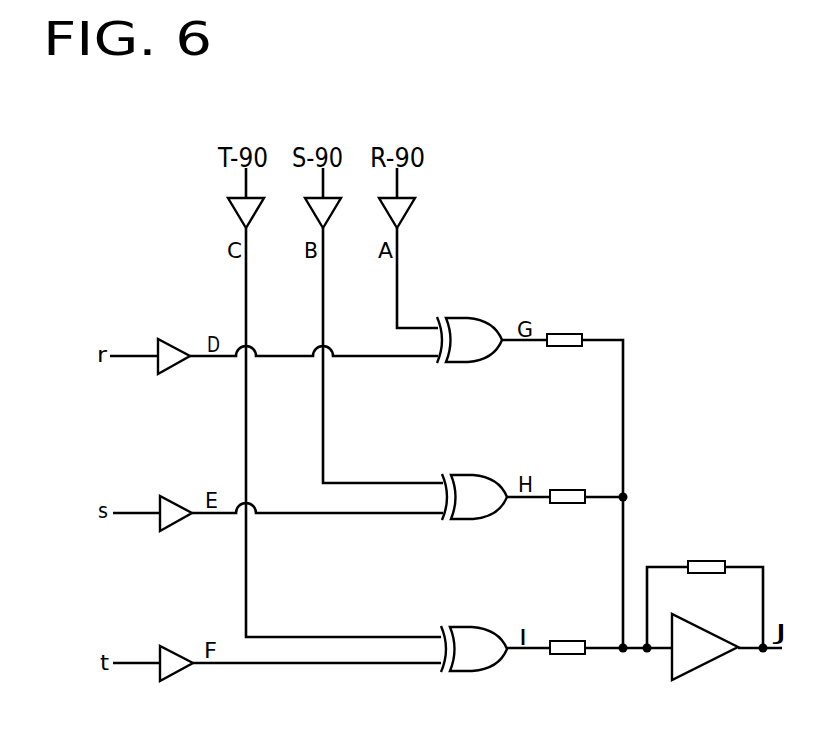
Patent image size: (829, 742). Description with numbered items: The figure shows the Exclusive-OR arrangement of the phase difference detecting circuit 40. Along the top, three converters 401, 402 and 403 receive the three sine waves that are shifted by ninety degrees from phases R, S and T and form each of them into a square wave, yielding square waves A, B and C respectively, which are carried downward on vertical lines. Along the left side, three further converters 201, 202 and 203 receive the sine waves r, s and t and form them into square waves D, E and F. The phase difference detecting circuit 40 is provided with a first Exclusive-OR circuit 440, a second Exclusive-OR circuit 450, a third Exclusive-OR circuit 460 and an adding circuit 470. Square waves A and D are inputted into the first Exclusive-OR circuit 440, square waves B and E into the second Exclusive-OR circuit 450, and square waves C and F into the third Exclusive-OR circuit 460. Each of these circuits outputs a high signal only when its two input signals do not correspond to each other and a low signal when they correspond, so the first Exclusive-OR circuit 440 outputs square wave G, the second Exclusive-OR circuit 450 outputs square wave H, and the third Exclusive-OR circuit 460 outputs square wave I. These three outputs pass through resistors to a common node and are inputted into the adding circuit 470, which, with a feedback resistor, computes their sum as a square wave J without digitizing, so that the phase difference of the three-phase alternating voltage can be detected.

The phase difference detecting circuit 40 is at (491, 488).
The converter 201 is at (178, 367).
The converter 202 is at (177, 523).
The converter 203 is at (177, 673).
The converter 401 is at (400, 212).
The converter 402 is at (356, 212).
The converter 403 is at (234, 212).
The first Exclusive-OR circuit 440 is at (483, 362).
The second Exclusive-OR circuit 450 is at (481, 519).
The third Exclusive-OR circuit 460 is at (483, 671).
The adding circuit 470 is at (697, 653).